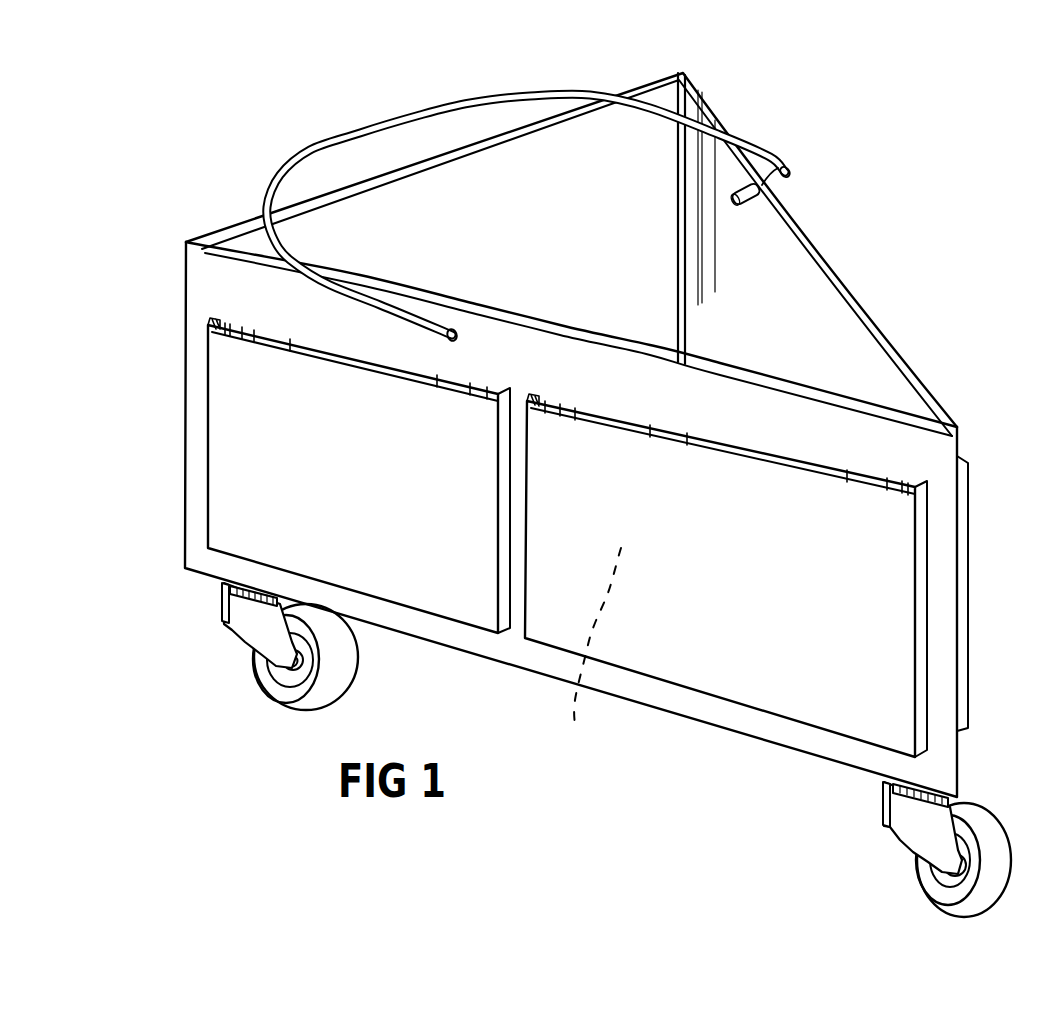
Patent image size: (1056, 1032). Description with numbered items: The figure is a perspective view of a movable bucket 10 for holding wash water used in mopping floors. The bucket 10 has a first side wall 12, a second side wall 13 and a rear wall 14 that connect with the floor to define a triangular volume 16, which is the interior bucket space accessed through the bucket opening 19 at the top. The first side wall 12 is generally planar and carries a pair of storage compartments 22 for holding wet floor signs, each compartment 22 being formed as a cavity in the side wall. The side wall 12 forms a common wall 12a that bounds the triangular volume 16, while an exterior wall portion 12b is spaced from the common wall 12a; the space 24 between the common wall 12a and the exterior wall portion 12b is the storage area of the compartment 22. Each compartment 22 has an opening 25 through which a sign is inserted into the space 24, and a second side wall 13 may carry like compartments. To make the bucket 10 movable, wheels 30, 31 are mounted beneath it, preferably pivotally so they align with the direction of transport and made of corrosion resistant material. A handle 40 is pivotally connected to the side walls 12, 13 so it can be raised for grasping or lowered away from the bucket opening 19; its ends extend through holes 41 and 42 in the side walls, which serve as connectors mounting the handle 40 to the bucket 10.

The movable bucket 10 is at (928, 232).
The first side wall 12 is at (657, 410).
The common wall 12a is at (800, 457).
The exterior wall portion 12b is at (853, 549).
The second side wall 13 is at (828, 310).
The rear wall 14 is at (523, 218).
The triangular volume 16 is at (755, 353).
The bucket opening 19 is at (847, 360).
The compartment 22 is at (390, 508).
The space 24 is at (592, 662).
The opening 25 is at (338, 345).
The wheel 30 is at (917, 863).
The wheel 31 is at (258, 665).
The handle 40 is at (365, 131).
The hole 41 is at (458, 342).
The hole 42 is at (760, 196).